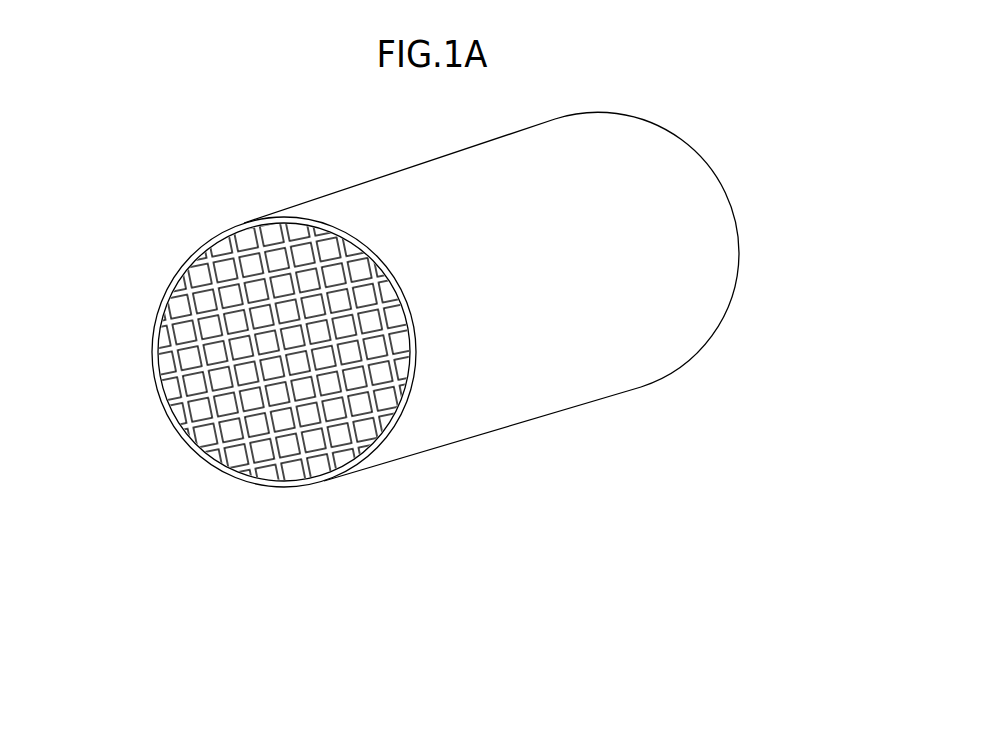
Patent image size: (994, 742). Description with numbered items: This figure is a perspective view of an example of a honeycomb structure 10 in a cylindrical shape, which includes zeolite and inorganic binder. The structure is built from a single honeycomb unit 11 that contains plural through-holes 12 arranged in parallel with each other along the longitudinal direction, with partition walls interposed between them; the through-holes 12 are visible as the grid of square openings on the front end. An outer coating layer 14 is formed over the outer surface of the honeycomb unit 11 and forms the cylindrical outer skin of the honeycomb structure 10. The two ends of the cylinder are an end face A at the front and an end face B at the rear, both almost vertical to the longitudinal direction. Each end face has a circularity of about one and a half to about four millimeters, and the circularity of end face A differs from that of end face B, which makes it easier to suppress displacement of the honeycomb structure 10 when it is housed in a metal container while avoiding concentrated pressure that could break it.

The honeycomb structure 10 is at (443, 310).
The honeycomb unit 11 is at (313, 373).
The through-holes 12 is at (257, 402).
The outer coating layer 14 is at (207, 237).
The end face A is at (289, 357).
The end face B is at (744, 166).